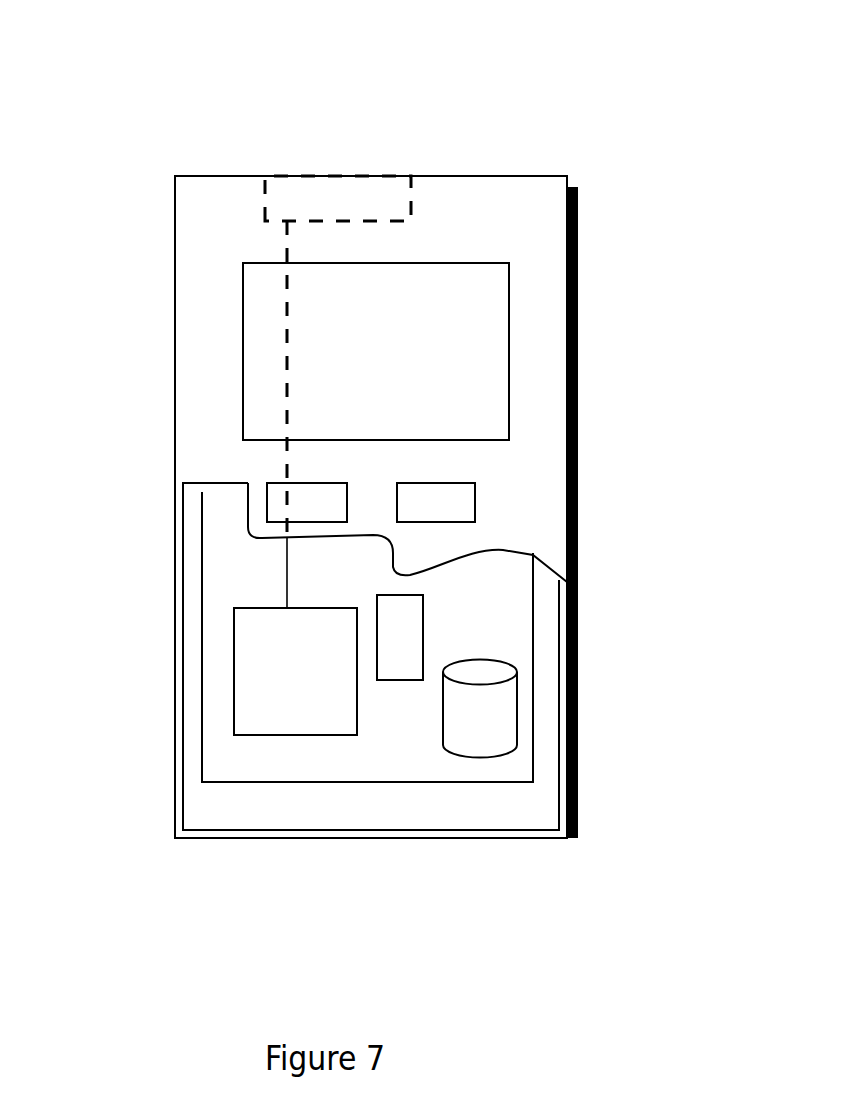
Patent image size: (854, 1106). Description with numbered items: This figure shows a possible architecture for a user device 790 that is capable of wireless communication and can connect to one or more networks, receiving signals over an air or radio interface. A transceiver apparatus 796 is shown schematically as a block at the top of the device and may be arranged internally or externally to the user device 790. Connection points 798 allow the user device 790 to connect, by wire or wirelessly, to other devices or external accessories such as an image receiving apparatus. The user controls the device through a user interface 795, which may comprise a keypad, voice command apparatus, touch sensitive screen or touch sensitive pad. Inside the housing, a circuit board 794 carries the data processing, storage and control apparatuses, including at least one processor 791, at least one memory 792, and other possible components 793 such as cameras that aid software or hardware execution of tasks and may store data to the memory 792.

The user device 790 is at (175, 232).
The transceiver apparatus 796 is at (397, 192).
The connection points 798 is at (268, 335).
The user interface 795 is at (273, 505).
The circuit board 794 is at (232, 758).
The other possible components 793 is at (402, 618).
The processor 791 is at (242, 650).
The memory 792 is at (470, 723).